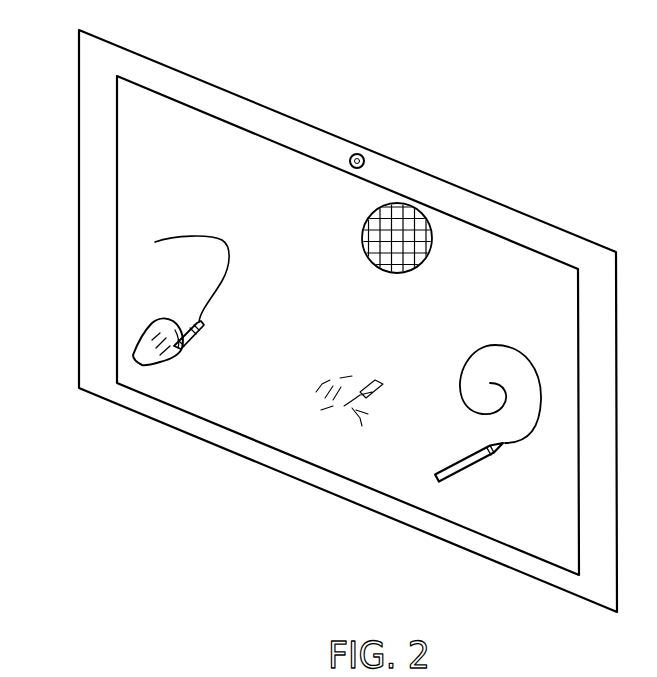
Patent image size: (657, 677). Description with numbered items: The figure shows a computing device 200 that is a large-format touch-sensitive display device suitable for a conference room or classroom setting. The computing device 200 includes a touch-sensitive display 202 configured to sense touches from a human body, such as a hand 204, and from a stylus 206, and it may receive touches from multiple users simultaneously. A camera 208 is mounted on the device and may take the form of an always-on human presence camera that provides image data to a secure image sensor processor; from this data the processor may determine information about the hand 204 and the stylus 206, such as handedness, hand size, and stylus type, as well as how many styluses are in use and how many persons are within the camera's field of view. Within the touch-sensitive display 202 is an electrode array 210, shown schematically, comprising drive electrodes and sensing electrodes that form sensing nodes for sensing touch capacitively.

The computing device 200 is at (524, 93).
The touch-sensitive display 202 is at (117, 152).
The hand 204 is at (169, 359).
The stylus 206 is at (440, 485).
The camera 208 is at (363, 154).
The electrode array 210 is at (423, 216).